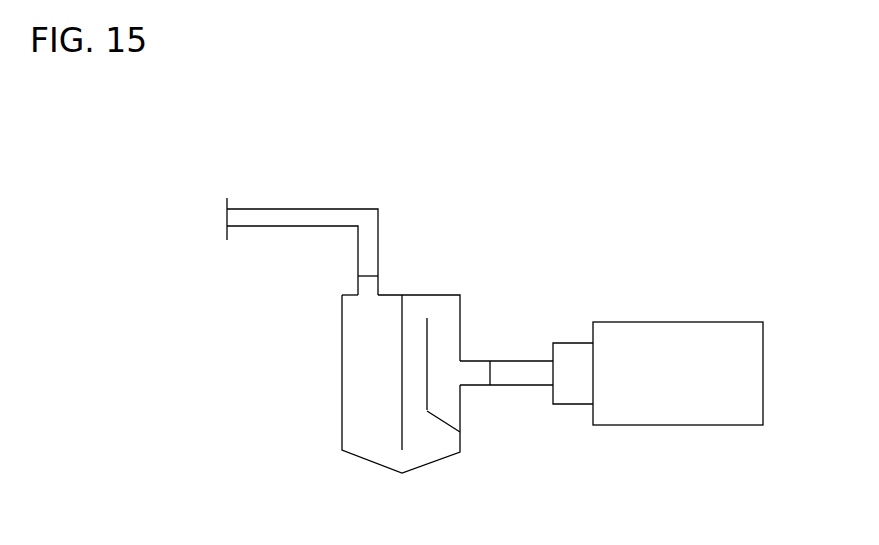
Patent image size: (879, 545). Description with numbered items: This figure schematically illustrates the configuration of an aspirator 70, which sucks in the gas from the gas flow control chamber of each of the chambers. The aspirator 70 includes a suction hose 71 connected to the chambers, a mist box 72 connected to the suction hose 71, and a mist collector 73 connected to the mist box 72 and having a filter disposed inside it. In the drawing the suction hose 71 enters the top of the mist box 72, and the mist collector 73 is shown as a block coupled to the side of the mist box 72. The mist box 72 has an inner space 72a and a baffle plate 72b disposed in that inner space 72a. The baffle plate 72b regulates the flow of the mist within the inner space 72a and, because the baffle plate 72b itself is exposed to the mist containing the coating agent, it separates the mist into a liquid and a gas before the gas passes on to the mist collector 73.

The aspirator 70 is at (185, 193).
The suction hose 71 is at (315, 220).
The mist box 72 is at (362, 437).
The inner space 72a is at (362, 368).
The baffle plate 72b is at (427, 410).
The mist collector 73 is at (679, 420).